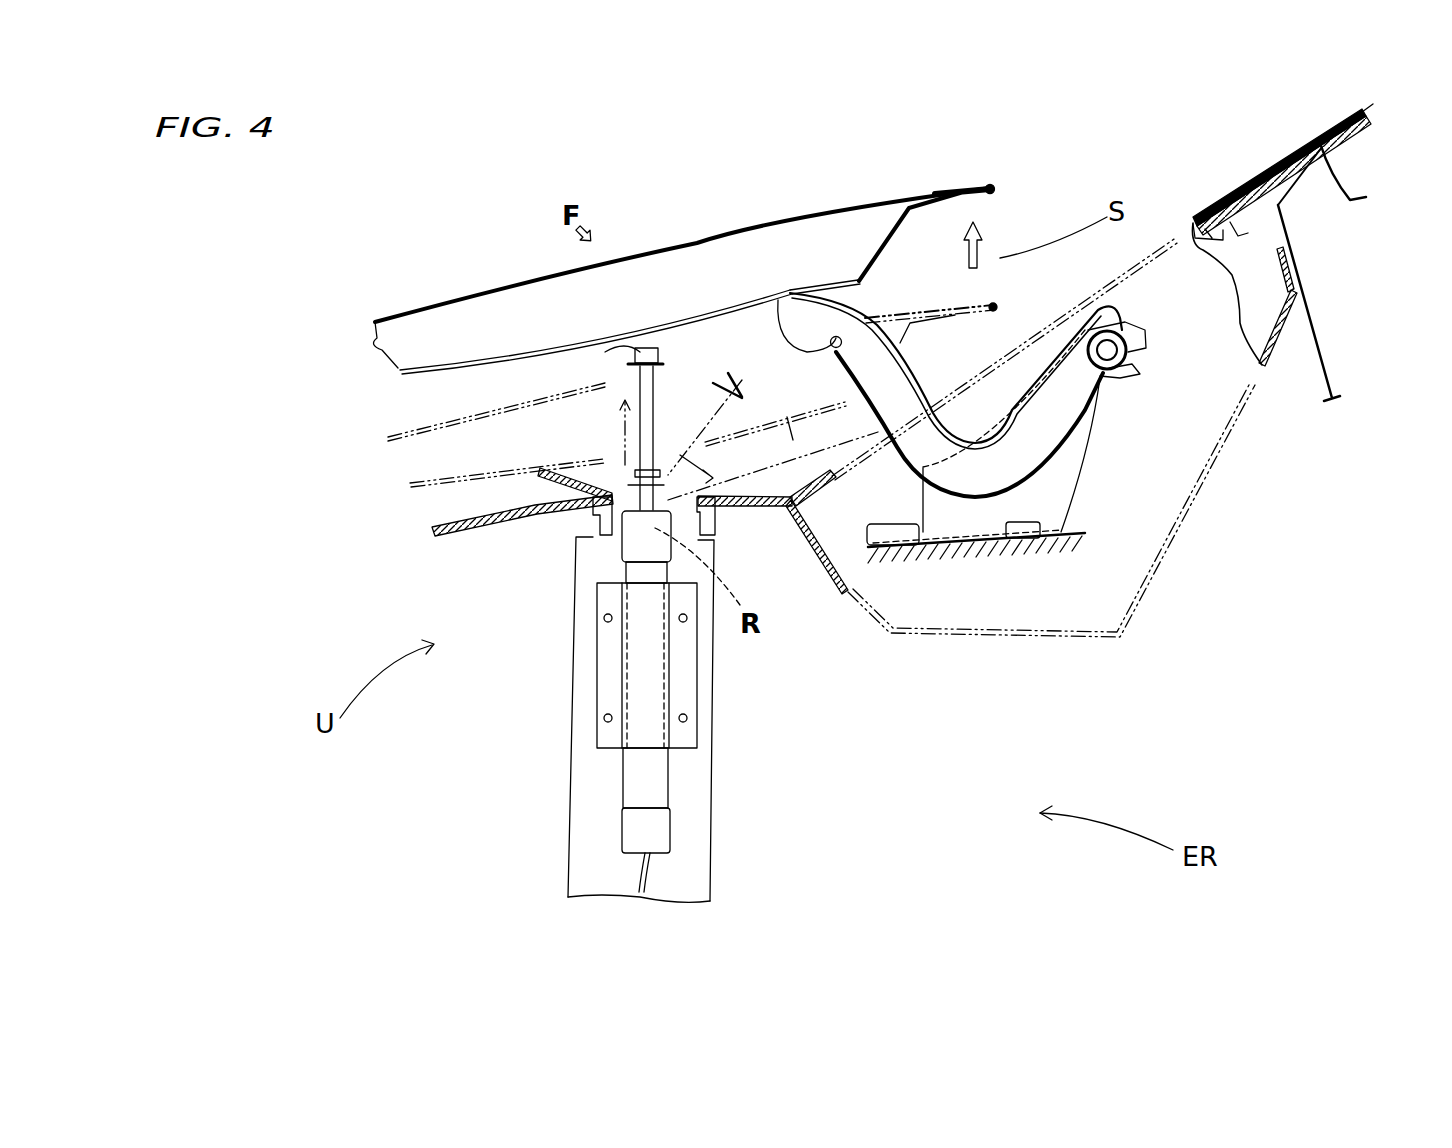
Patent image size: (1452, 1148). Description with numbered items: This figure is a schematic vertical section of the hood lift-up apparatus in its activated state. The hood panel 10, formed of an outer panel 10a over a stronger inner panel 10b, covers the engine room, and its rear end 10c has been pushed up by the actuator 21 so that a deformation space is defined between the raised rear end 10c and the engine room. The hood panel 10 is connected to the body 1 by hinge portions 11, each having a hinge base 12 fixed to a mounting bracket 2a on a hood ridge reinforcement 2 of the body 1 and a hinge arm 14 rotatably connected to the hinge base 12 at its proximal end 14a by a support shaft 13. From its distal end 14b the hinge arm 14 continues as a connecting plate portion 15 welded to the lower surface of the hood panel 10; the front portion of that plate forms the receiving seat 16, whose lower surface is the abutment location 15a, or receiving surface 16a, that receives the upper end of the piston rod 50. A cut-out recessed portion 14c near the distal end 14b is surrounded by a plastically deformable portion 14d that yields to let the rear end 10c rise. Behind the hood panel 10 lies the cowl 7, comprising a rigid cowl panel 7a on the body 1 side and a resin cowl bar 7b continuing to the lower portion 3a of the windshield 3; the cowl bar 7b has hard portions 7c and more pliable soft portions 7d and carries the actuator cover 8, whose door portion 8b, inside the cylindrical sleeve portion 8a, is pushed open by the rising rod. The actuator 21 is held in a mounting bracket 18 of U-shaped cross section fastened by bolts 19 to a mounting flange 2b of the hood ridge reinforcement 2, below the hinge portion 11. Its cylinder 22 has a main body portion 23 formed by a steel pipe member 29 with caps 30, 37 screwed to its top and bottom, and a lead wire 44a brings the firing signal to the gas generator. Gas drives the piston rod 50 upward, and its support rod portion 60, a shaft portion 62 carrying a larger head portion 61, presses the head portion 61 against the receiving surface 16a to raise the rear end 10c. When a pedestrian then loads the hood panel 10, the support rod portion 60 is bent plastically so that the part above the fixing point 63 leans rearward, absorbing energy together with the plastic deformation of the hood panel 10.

The body 1 is at (1075, 543).
The hood ridge reinforcement 2 is at (1043, 470).
The mounting bracket 2a is at (1043, 470).
The mounting flange 2b is at (590, 865).
The windshield 3 is at (1315, 252).
The lower portion 3a is at (1362, 113).
The cowl 7 is at (611, 606).
The cowl panel 7a is at (832, 600).
The cowl bar 7b is at (836, 490).
The hard portions 7c is at (435, 525).
The soft portions 7d is at (593, 517).
The actuator cover 8 is at (625, 484).
The cylindrical sleeve portion 8a is at (720, 527).
The door portion 8b is at (558, 470).
The hood panel 10 is at (722, 254).
The outer panel 10a is at (433, 303).
The inner panel 10b is at (400, 362).
The rear end 10c is at (981, 287).
The hinge portion 11 is at (1097, 503).
The hinge base 12 is at (1073, 463).
The support shaft 13 is at (1115, 352).
The hinge arm 14 is at (1026, 333).
The proximal end 14a is at (1117, 313).
The distal end 14b is at (797, 315).
The cut-out recessed portion 14c is at (837, 335).
The plastically deformable portion 14d is at (843, 330).
The connecting plate portion 15 is at (636, 355).
The receiving seat 16 is at (628, 350).
The abutment location 15a is at (547, 289).
The receiving surface 16a is at (567, 353).
The mounting bracket 18 is at (683, 742).
The bolts 19 is at (607, 618).
The actuator 21 is at (685, 716).
The cylinder 22 is at (764, 784).
The main body portion 23 is at (764, 784).
The steel pipe member 29 is at (660, 783).
The cap 30 is at (633, 547).
The cap 37 is at (660, 830).
The lead wire 44a is at (650, 872).
The piston rod 50 is at (636, 337).
The support rod portion 60 is at (636, 337).
The head portion 61 is at (636, 337).
The shaft portion 62 is at (693, 430).
The fixing point 63 is at (630, 503).